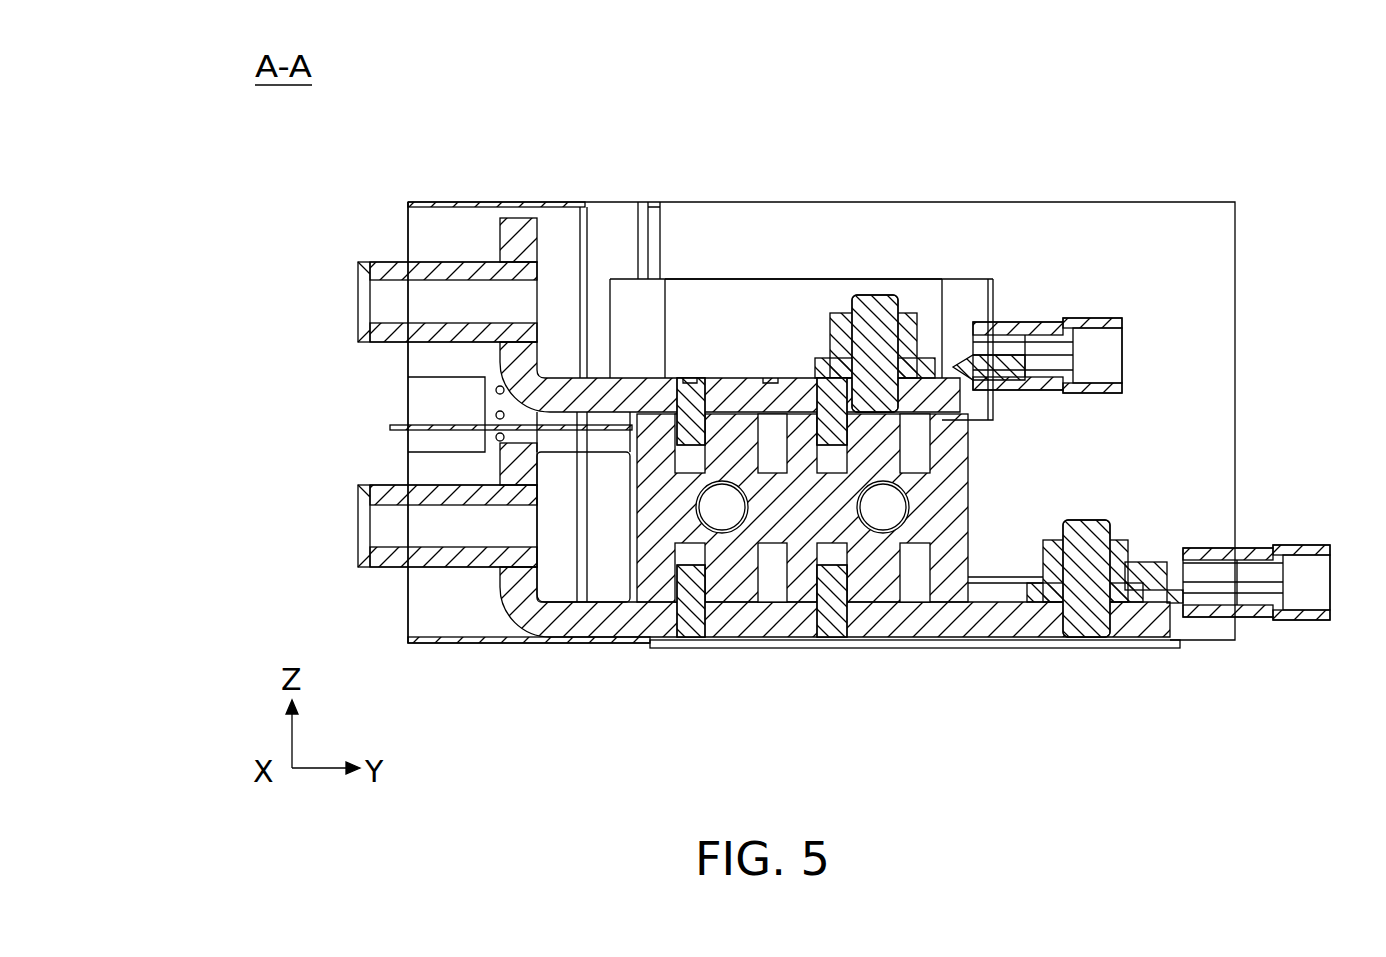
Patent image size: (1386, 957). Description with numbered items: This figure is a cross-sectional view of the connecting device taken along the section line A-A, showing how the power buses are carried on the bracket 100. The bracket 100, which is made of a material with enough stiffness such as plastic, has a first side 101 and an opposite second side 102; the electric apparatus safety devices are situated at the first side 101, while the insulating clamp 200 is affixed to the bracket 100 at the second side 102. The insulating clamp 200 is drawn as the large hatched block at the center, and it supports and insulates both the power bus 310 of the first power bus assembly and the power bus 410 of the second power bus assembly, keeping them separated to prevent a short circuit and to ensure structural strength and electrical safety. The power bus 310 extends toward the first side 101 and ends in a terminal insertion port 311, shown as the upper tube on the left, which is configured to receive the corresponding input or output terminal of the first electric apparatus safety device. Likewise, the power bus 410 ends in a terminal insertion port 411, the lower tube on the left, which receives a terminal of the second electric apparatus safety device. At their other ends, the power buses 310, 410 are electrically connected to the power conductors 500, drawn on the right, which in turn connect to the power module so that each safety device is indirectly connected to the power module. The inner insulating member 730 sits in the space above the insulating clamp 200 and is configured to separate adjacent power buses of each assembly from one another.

The bracket 100 is at (613, 235).
The first side 101 is at (366, 241).
The second side 102 is at (705, 251).
The inner insulating member 730 is at (803, 313).
The power bus 310 is at (936, 395).
The terminal insertion port 311 is at (403, 302).
The terminal insertion port 411 is at (403, 524).
The power bus 410 is at (762, 618).
The insulating clamp 200 is at (947, 563).
The power conductor 500 is at (1097, 343).